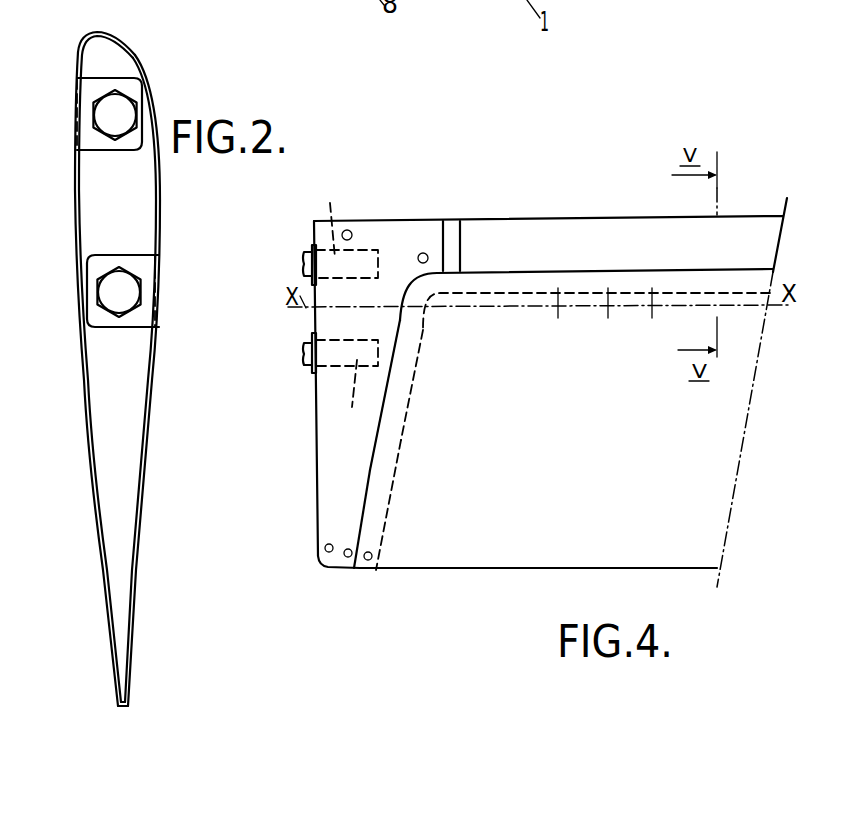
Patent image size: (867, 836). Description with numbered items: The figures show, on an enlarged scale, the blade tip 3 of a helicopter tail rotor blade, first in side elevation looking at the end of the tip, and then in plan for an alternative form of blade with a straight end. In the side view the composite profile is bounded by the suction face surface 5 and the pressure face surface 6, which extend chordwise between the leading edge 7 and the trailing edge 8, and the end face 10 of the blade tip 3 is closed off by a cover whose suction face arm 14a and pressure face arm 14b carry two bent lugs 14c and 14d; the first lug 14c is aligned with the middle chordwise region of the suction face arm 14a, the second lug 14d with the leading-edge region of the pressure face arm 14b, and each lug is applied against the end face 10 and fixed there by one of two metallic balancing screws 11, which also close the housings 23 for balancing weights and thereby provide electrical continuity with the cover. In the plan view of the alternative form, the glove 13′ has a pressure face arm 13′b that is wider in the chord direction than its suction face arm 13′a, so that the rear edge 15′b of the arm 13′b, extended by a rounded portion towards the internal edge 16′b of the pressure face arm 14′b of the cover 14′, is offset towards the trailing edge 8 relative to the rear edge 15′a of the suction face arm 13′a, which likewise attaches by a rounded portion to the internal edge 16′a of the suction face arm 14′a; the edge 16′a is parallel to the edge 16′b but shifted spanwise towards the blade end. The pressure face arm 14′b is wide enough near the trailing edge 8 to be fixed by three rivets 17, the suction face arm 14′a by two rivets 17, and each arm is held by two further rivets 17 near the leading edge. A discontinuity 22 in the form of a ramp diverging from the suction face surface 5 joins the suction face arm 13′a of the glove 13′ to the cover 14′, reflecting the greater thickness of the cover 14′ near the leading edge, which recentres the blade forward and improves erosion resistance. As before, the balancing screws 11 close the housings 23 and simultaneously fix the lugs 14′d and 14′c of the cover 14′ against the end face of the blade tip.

In FIG. 2, the blade tip 3 is at (51, 21).
In FIG. 2, the suction face surface 5 is at (156, 368).
In FIG. 2, the pressure face surface 6 is at (94, 470).
In FIG. 2, the leading edge 7 is at (97, 34).
In FIG. 2, the trailing edge 8 is at (121, 710).
In FIG. 4, the trailing edge 8 is at (540, 570).
In FIG. 2, the end face 10 is at (120, 467).
In FIG. 2, the balancing screws 11 is at (106, 115).
In FIG. 4, the balancing screws 11 is at (303, 262).
In FIG. 4, the glove 13′ is at (757, 212).
In FIG. 4, the suction face arm of the glove 13′a is at (583, 240).
In FIG. 4, the pressure face arm of the glove 13′b is at (664, 318).
In FIG. 4, the cover 14′ is at (318, 490).
In FIG. 4, the suction face arm of the cover 14′a is at (367, 452).
In FIG. 4, the pressure face arm of the cover 14′b is at (397, 480).
In FIG. 4, the lug of the cover 14′c is at (313, 372).
In FIG. 4, the lug of the cover 14′d is at (312, 250).
In FIG. 2, the suction face arm of the cover 14a is at (158, 194).
In FIG. 2, the pressure face arm of the cover 14b is at (76, 194).
In FIG. 2, the first lug 14c is at (143, 265).
In FIG. 2, the second lug 14d is at (95, 93).
In FIG. 4, the rear edge of the suction face arm of the glove 15′a is at (492, 312).
In FIG. 4, the rear edge of the pressure face arm of the glove 15′b is at (596, 324).
In FIG. 4, the internal edge of the suction face arm of the cover 16′a is at (370, 510).
In FIG. 4, the internal edge of the pressure face arm of the cover 16′b is at (409, 405).
In FIG. 2, the rivets 17 is at (19, 21).
In FIG. 4, the rivets 17 is at (421, 253).
In FIG. 4, the discontinuity 22 is at (453, 243).
In FIG. 4, the housings 23 is at (344, 307).